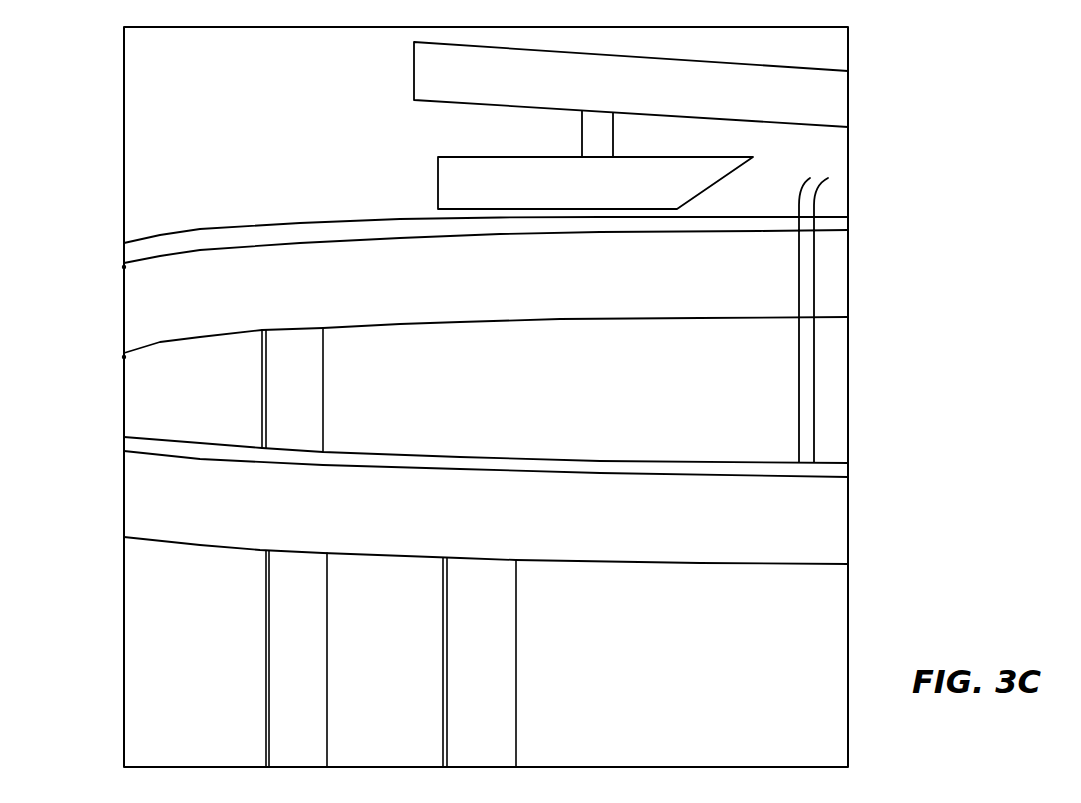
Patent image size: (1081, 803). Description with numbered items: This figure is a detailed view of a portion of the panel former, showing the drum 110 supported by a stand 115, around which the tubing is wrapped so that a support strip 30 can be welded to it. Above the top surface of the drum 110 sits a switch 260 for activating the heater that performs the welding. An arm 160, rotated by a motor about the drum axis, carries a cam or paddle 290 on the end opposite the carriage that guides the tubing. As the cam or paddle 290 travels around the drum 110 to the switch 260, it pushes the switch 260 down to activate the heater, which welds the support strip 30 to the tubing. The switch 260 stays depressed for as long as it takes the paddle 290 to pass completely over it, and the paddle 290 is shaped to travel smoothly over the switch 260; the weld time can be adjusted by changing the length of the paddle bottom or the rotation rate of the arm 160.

The arm 160 is at (819, 83).
The cam or paddle 290 is at (453, 188).
The switch 260 is at (830, 165).
The drum 110 is at (182, 293).
The support strip 30 is at (813, 355).
The stand 115 is at (462, 616).